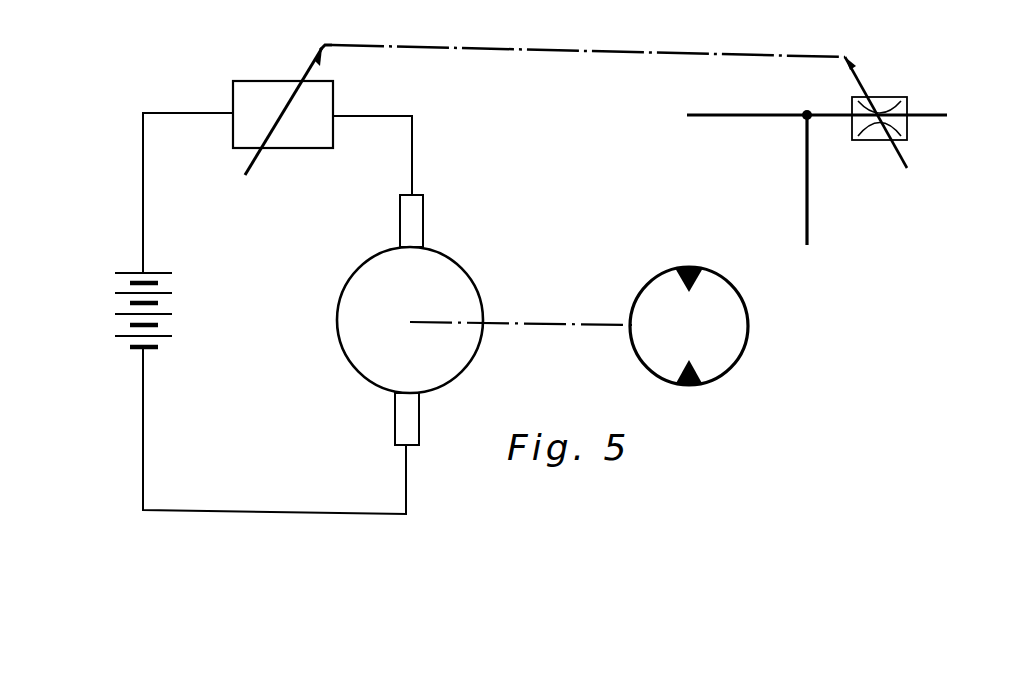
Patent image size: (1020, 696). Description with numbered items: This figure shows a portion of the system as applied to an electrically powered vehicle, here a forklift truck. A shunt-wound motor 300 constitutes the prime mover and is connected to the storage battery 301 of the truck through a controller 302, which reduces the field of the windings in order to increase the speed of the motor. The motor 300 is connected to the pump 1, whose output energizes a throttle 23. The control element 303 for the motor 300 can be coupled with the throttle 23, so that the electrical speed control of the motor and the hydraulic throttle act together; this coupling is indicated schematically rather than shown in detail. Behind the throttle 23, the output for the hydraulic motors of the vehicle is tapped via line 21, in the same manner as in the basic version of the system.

The pump 1 is at (742, 353).
The line 21 is at (810, 205).
The throttle 23 is at (887, 97).
The shunt-wound motor 300 is at (462, 266).
The storage battery 301 is at (118, 305).
The controller 302 is at (297, 150).
The control element 303 is at (308, 72).